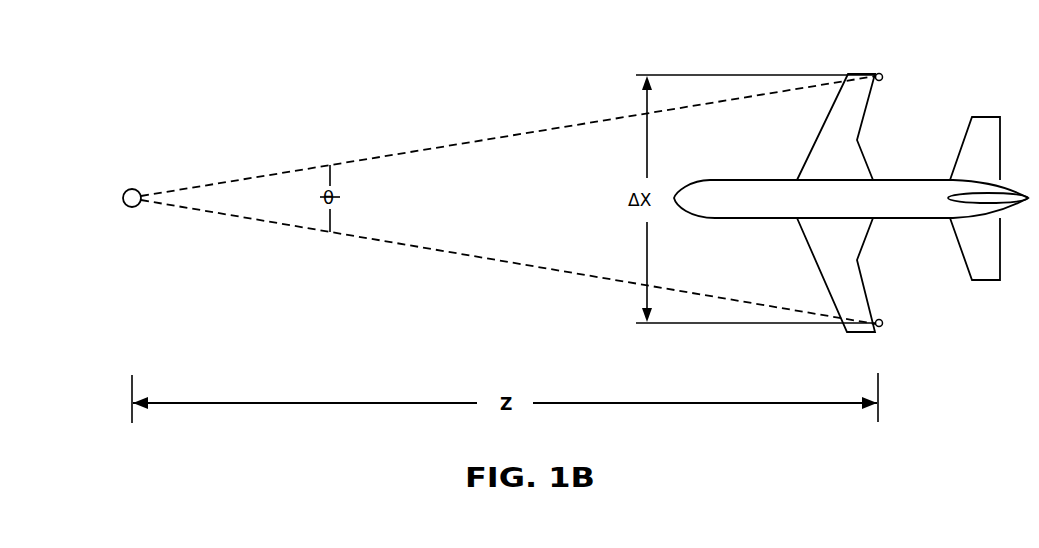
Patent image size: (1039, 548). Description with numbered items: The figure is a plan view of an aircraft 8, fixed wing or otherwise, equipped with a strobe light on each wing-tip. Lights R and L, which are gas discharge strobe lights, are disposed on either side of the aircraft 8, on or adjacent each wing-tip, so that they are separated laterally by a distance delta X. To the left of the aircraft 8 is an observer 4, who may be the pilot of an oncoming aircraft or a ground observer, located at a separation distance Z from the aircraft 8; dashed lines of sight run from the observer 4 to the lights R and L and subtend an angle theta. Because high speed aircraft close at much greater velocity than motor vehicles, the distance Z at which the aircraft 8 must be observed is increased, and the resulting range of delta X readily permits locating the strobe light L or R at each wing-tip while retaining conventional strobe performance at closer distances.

The observer 4 is at (114, 197).
The aircraft 8 is at (793, 157).
The light R is at (890, 81).
The light L is at (890, 327).